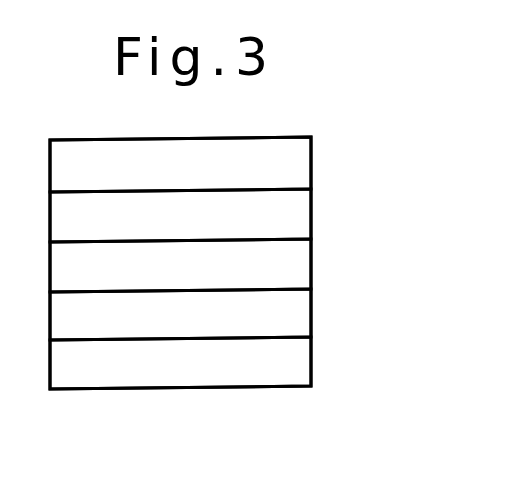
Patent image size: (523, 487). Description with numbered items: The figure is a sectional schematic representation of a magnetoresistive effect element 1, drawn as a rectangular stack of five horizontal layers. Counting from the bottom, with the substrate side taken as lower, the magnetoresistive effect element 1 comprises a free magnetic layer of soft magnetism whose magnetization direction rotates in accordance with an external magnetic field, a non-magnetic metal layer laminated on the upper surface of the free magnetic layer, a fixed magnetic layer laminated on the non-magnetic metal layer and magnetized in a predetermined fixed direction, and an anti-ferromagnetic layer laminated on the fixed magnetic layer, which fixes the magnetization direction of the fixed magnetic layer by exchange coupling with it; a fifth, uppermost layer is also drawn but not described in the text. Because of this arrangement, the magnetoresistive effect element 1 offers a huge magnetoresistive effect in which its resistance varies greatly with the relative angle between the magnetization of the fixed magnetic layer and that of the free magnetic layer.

The magnetoresistive effect element 1 is at (333, 119).